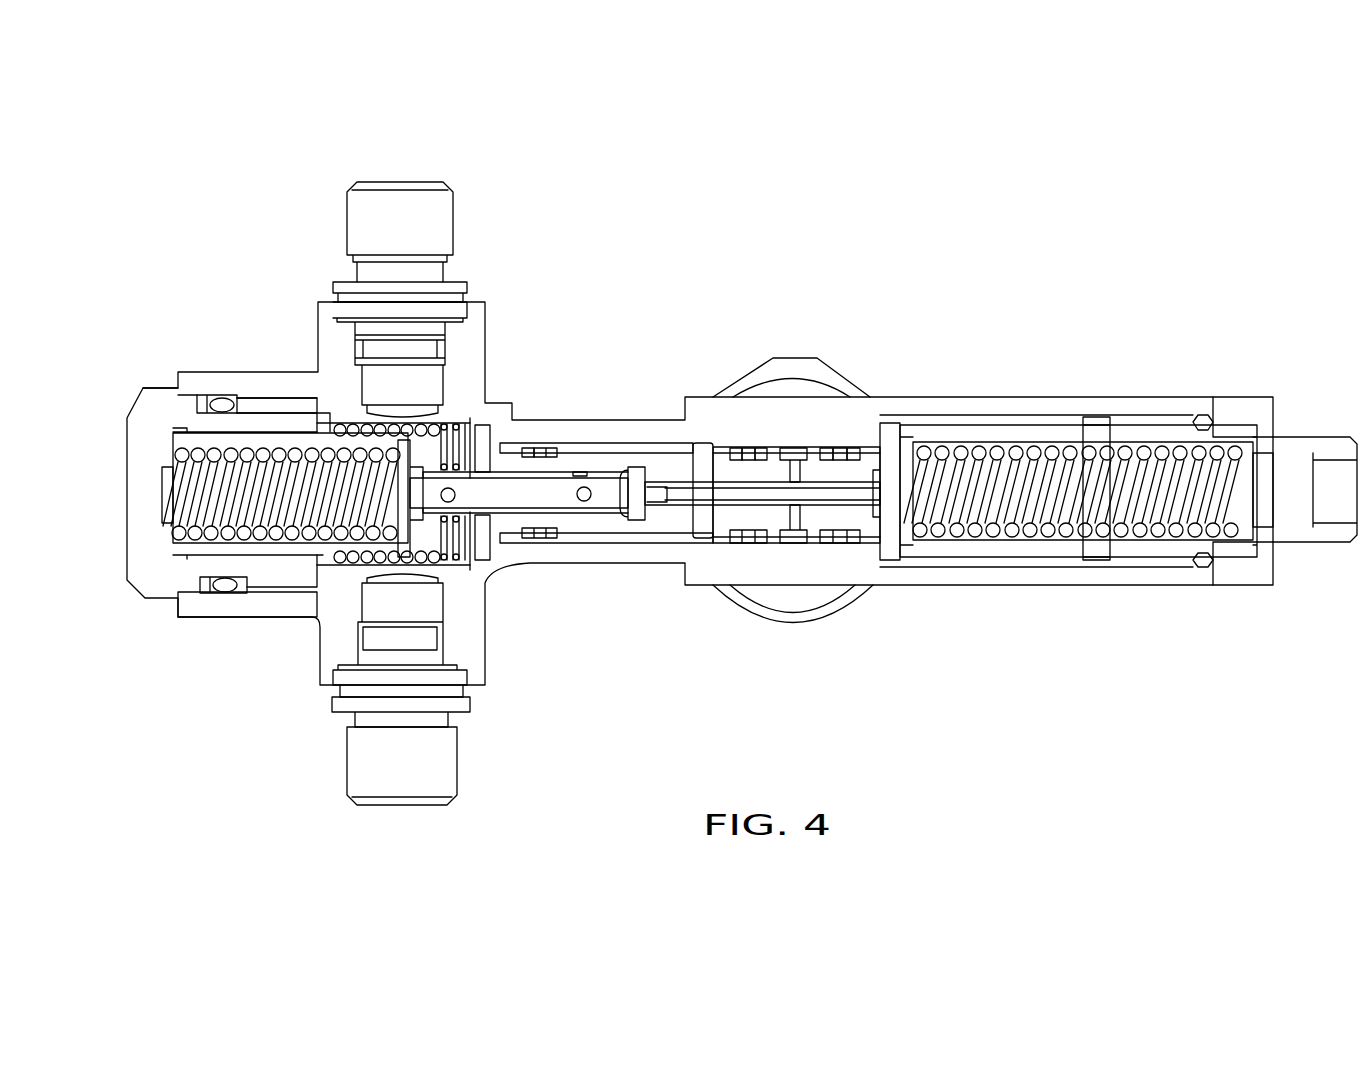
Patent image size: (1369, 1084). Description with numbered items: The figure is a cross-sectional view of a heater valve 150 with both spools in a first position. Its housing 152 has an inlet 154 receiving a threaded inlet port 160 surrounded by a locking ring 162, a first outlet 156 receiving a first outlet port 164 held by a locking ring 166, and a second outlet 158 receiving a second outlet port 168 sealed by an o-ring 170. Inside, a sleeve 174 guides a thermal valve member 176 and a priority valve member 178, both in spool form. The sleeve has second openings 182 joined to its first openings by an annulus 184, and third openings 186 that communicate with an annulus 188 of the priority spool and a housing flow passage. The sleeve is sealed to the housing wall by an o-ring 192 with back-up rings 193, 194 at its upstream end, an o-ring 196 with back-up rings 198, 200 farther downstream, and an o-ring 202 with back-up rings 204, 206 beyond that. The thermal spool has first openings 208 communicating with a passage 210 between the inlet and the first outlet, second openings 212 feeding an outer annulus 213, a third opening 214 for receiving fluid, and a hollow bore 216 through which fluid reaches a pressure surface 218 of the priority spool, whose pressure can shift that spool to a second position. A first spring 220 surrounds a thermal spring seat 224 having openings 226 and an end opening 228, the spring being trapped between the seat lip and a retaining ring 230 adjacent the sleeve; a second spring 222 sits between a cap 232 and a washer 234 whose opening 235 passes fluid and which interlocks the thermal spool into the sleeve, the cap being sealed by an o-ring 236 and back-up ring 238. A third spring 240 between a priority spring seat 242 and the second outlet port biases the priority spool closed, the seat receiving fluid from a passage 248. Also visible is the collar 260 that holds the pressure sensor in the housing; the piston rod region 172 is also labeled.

The heater valve 150 is at (1212, 291).
The housing 152 is at (1070, 395).
The inlet 154 is at (486, 328).
The first outlet 156 is at (358, 637).
The second outlet 158 is at (1195, 416).
The inlet port 160 is at (450, 222).
The locking ring 162 is at (466, 288).
The first outlet port 164 is at (459, 760).
The locking ring 166 is at (468, 707).
The second outlet port 168 is at (1276, 420).
The o-ring 170 is at (1203, 567).
The piston rod 172 is at (605, 543).
The sleeve 174 is at (600, 470).
The thermal valve member 176 is at (515, 512).
The priority valve member 178 is at (866, 500).
The second openings 182 is at (698, 450).
The annulus 184 is at (690, 545).
The third openings 186 is at (778, 545).
The annulus 188 is at (745, 545).
The o-ring 192 is at (528, 447).
The back-up ring 193 is at (546, 447).
The back-up ring 194 is at (582, 472).
The o-ring 196 is at (748, 447).
The back-up ring 198 is at (734, 447).
The back-up ring 200 is at (762, 450).
The o-ring 202 is at (842, 448).
The back-up ring 204 is at (827, 448).
The back-up ring 206 is at (856, 448).
The first openings 208 is at (455, 488).
The passage 210 is at (415, 492).
The second openings 212 is at (590, 540).
The annulus 213 is at (705, 460).
The third opening 214 is at (468, 430).
The hollow bore 216 is at (613, 560).
The pressure surface 218 is at (636, 522).
The first spring 220 is at (355, 560).
The second spring 222 is at (205, 585).
The thermal spring seat 224 is at (260, 438).
The openings 226 is at (375, 560).
The opening 228 is at (168, 497).
The retaining ring 230 is at (470, 560).
The cap 232 is at (150, 402).
The washer 234 is at (440, 440).
The opening 235 is at (455, 425).
The o-ring 236 is at (226, 400).
The back-up ring 238 is at (255, 405).
The third spring 240 is at (1034, 445).
The priority spring seat 242 is at (940, 552).
The passage 248 is at (1097, 557).
The collar 260 is at (810, 627).